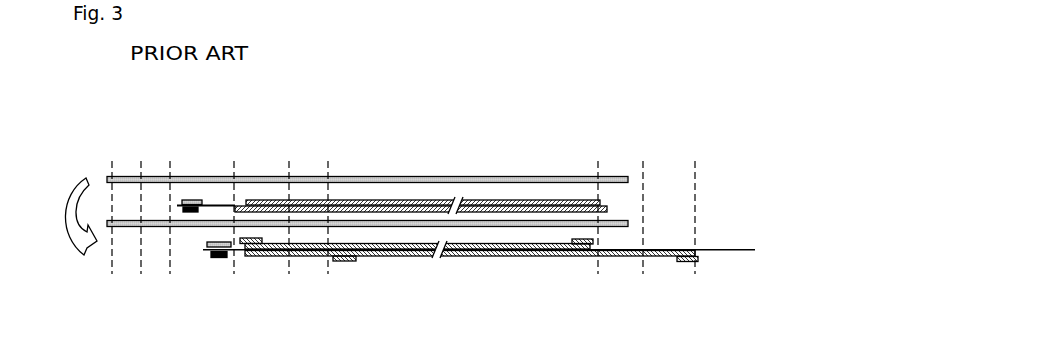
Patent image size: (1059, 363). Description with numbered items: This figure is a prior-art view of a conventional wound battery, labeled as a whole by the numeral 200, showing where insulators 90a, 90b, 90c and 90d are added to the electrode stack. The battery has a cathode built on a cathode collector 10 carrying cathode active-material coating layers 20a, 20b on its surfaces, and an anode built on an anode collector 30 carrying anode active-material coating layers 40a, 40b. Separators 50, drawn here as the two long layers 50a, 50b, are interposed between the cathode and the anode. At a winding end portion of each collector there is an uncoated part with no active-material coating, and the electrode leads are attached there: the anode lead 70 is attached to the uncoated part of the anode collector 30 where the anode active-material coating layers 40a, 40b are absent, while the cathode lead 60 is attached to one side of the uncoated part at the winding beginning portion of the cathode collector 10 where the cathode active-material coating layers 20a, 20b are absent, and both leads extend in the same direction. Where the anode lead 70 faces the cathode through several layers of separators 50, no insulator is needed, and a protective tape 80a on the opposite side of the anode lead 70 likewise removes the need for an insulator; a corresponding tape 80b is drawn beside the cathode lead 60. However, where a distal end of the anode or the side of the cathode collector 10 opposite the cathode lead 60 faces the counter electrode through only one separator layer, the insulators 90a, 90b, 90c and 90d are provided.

The prior art display device 200 is at (578, 100).
The cathode collector 10 is at (732, 243).
The cathode active-material coating layer 20a is at (403, 260).
The cathode active-material coating layer 20b is at (513, 259).
The anode collector 30 is at (355, 200).
The anode active-material coating layer 40a is at (520, 198).
The anode active-material coating layer 40b is at (413, 198).
The separators 50 is at (400, 170).
The separator 50a is at (630, 180).
The separator 50b is at (640, 222).
The cathode lead 60 is at (220, 259).
The anode lead 70 is at (175, 207).
The protective tape 80a is at (190, 198).
The lower connection pad 80b is at (204, 249).
The insulator 90a is at (241, 249).
The insulator 90b is at (341, 263).
The insulator 90c is at (597, 247).
The insulator 90d is at (683, 264).